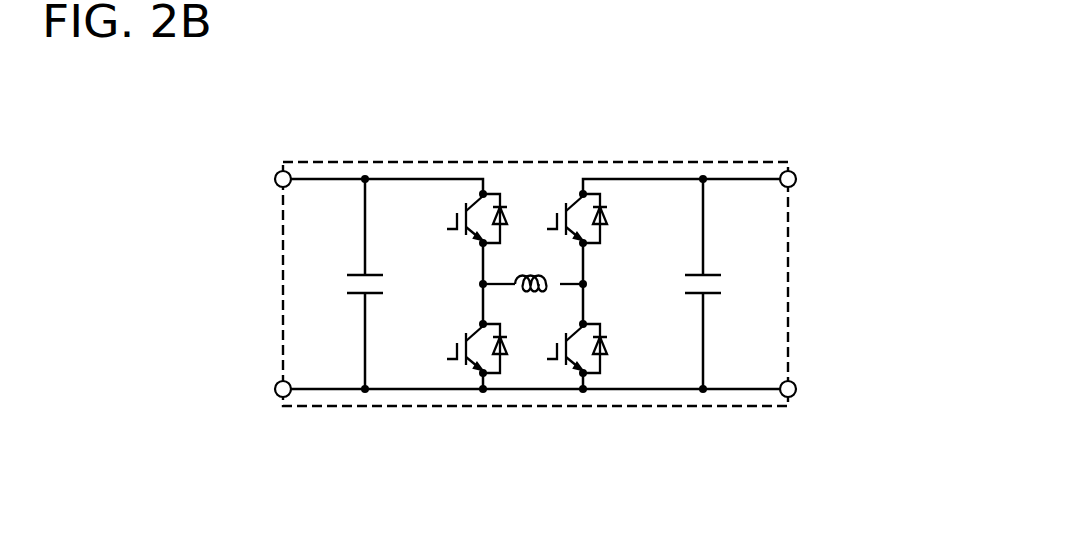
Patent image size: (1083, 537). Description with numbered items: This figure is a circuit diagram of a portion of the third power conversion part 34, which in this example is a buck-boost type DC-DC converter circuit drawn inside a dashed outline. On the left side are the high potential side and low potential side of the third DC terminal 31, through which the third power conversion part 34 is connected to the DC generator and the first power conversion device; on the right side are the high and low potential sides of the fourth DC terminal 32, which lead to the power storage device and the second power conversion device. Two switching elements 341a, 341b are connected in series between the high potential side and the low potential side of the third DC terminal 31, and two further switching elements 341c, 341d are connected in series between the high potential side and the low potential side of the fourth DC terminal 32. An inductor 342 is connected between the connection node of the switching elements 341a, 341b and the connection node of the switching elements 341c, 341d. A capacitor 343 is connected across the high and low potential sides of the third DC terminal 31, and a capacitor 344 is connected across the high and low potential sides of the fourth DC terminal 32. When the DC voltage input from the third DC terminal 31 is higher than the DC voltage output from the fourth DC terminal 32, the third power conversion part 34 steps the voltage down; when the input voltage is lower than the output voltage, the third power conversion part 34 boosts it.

The third DC terminal 31 is at (275, 179).
The fourth DC terminal 32 is at (797, 178).
The third power conversion part 34 is at (675, 160).
The switching element 341a is at (463, 197).
The switching element 341b is at (455, 367).
The switching element 341c is at (563, 197).
The switching element 341d is at (558, 367).
The inductor 342 is at (537, 297).
The capacitor 343 is at (378, 270).
The capacitor 344 is at (718, 268).